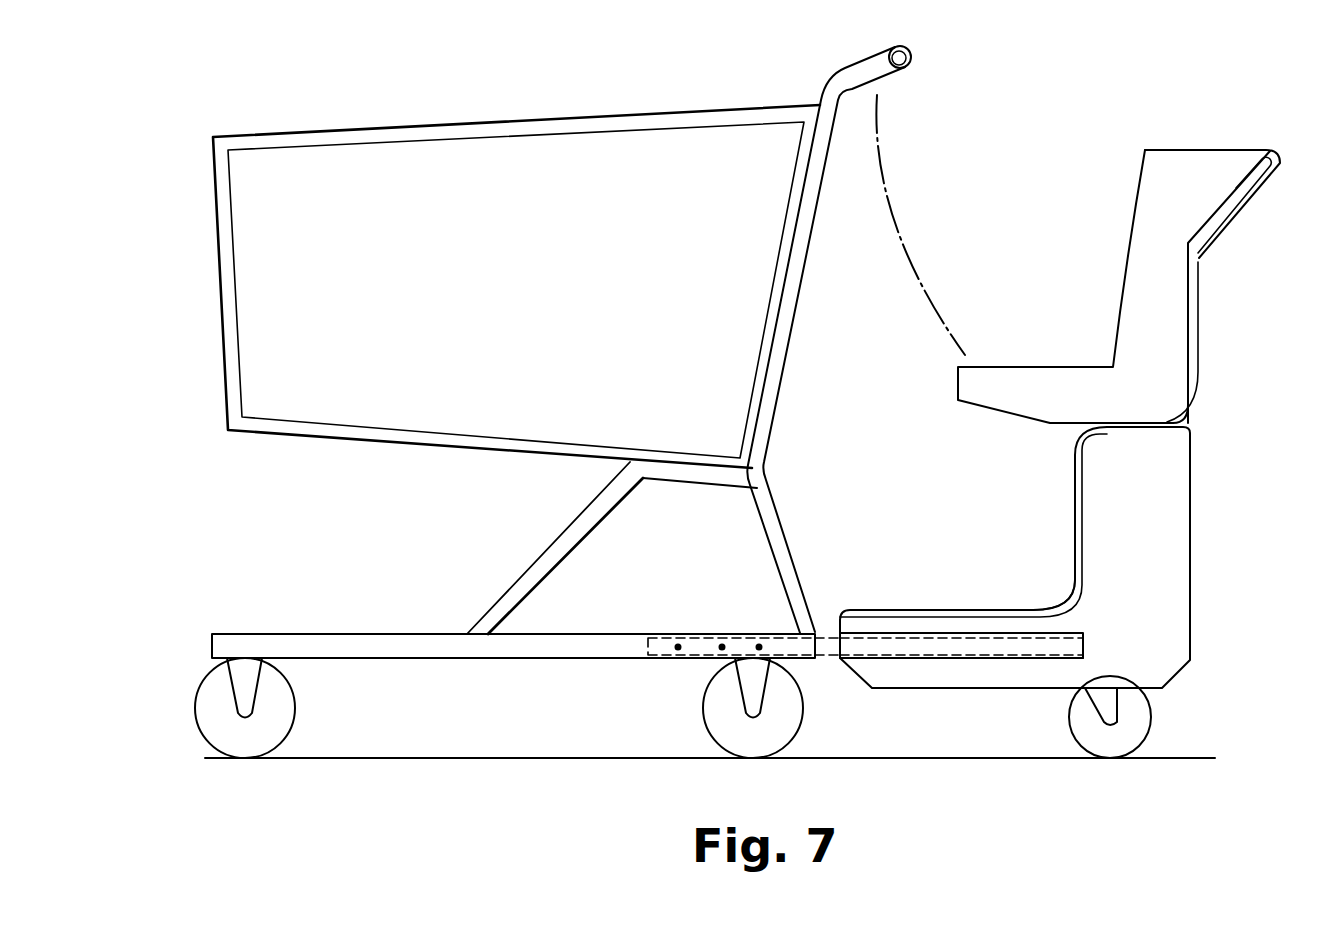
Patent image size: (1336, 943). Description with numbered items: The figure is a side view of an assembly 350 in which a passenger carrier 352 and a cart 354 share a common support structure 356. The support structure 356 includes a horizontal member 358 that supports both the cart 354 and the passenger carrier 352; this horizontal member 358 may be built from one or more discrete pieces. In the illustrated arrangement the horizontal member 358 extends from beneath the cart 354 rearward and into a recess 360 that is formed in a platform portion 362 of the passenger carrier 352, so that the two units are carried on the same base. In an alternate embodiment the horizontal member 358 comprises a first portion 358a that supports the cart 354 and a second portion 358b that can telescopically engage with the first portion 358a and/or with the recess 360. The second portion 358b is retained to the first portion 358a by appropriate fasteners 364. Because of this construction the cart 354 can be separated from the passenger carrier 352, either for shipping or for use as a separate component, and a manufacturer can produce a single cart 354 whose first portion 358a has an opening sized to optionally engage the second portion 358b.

The assembly 350 is at (548, 72).
The passenger carrier 352 is at (1183, 150).
The cart 354 is at (333, 130).
The support structure 356 is at (553, 530).
The horizontal member 358 is at (692, 592).
The first portion 358a is at (441, 660).
The second portion 358b is at (1008, 592).
The recess 360 is at (907, 633).
The platform portion 362 is at (983, 620).
The fasteners 364 is at (759, 647).